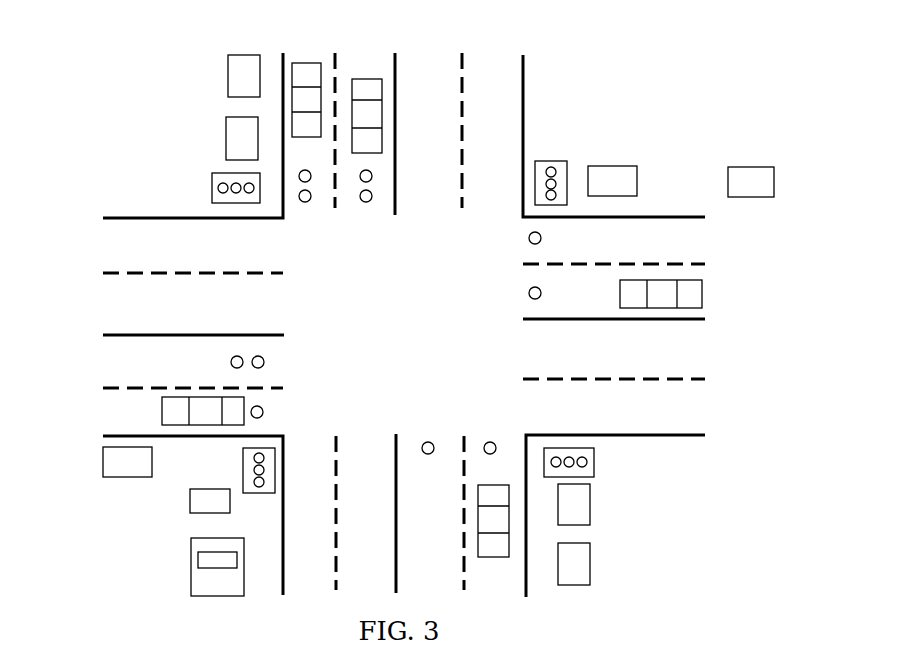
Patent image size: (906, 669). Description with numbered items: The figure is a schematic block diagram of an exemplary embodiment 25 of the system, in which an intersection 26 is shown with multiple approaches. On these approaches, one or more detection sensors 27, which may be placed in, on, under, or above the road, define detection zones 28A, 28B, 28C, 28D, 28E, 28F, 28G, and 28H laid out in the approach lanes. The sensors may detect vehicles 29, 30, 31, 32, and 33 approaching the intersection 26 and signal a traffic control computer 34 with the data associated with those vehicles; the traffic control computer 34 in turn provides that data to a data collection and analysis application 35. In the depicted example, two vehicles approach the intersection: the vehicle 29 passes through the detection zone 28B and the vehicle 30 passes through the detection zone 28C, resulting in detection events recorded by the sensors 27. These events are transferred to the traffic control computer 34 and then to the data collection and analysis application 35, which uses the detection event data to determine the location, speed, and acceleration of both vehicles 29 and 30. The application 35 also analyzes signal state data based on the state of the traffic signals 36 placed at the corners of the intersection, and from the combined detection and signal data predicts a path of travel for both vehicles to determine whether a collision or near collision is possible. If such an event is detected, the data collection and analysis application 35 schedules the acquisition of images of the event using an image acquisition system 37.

The exemplary embodiment 25 is at (103, 137).
The intersection 26 is at (334, 263).
The detection sensor 27 is at (237, 145).
The detection zone 28A is at (431, 444).
The detection zone 28B is at (493, 444).
The detection zone 28C is at (541, 293).
The detection zone 28D is at (530, 236).
The detection zone 28E is at (368, 199).
The detection zone 28F is at (307, 199).
The detection zone 28G is at (262, 357).
The detection zone 28H is at (263, 410).
The vehicle 29 is at (492, 553).
The vehicle 30 is at (700, 295).
The vehicle 31 is at (372, 90).
The vehicle 32 is at (303, 72).
The vehicle 33 is at (183, 405).
The traffic control computer 34 is at (230, 586).
The data collection and analysis application 35 is at (205, 560).
The traffic signal 36 is at (220, 188).
The image acquisition system 37 is at (235, 82).